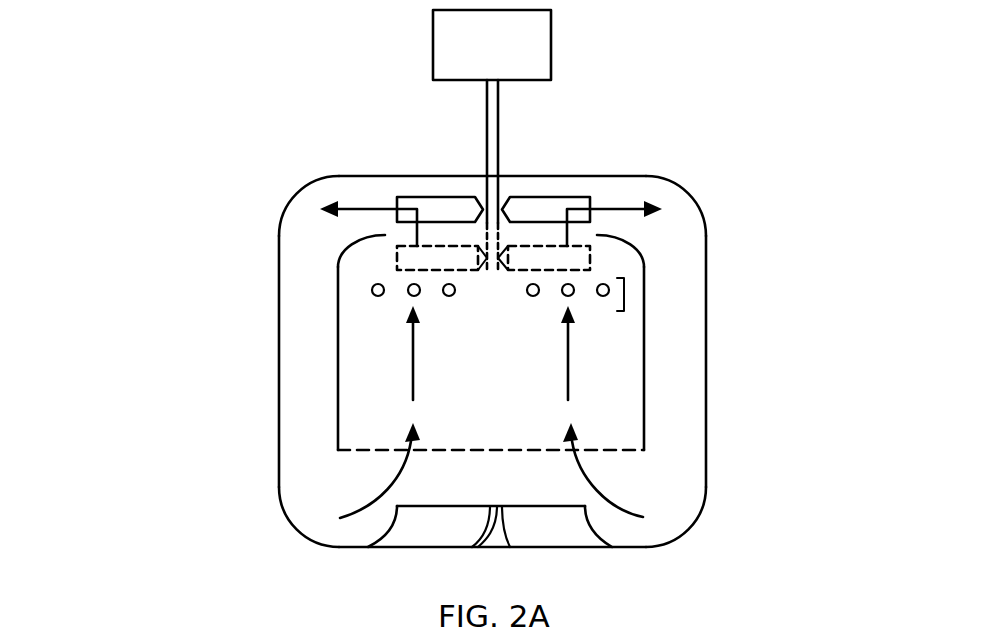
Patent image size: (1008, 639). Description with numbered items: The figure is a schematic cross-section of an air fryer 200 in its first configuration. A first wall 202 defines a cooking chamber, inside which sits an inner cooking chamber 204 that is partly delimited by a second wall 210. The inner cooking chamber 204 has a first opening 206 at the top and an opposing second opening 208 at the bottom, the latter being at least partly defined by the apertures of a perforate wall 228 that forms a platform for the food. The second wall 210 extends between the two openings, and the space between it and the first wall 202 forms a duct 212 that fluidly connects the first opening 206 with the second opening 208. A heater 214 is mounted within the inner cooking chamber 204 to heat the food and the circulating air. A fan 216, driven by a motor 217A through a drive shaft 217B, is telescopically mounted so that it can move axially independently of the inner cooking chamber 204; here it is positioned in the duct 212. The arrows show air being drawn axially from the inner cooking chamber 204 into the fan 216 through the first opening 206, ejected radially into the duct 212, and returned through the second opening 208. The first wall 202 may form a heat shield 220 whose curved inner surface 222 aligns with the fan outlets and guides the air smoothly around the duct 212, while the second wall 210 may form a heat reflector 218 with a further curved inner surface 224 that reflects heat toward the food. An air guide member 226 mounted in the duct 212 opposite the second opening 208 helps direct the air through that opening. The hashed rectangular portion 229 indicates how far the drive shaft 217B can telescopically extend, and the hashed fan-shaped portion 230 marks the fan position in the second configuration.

The air fryer 200 is at (142, 69).
The first wall 202 is at (280, 360).
The inner cooking chamber 204 is at (610, 393).
The first opening 206 is at (397, 245).
The second opening 208 is at (370, 452).
The second wall 210 is at (337, 420).
The duct 212 is at (677, 472).
The heater 214 is at (627, 302).
The fan 216 is at (447, 213).
The motor 217A is at (530, 52).
The drive shaft 217B is at (493, 147).
The heat reflector 218 is at (352, 250).
The heat shield 220 is at (697, 207).
The curved inner surface 222 is at (300, 200).
The further curved inner surface 224 is at (570, 258).
The air guide member 226 is at (427, 538).
The perforate wall 228 is at (617, 457).
The hashed rectangular portion 229 is at (483, 250).
The hashed fan-shaped portion 230 is at (600, 238).